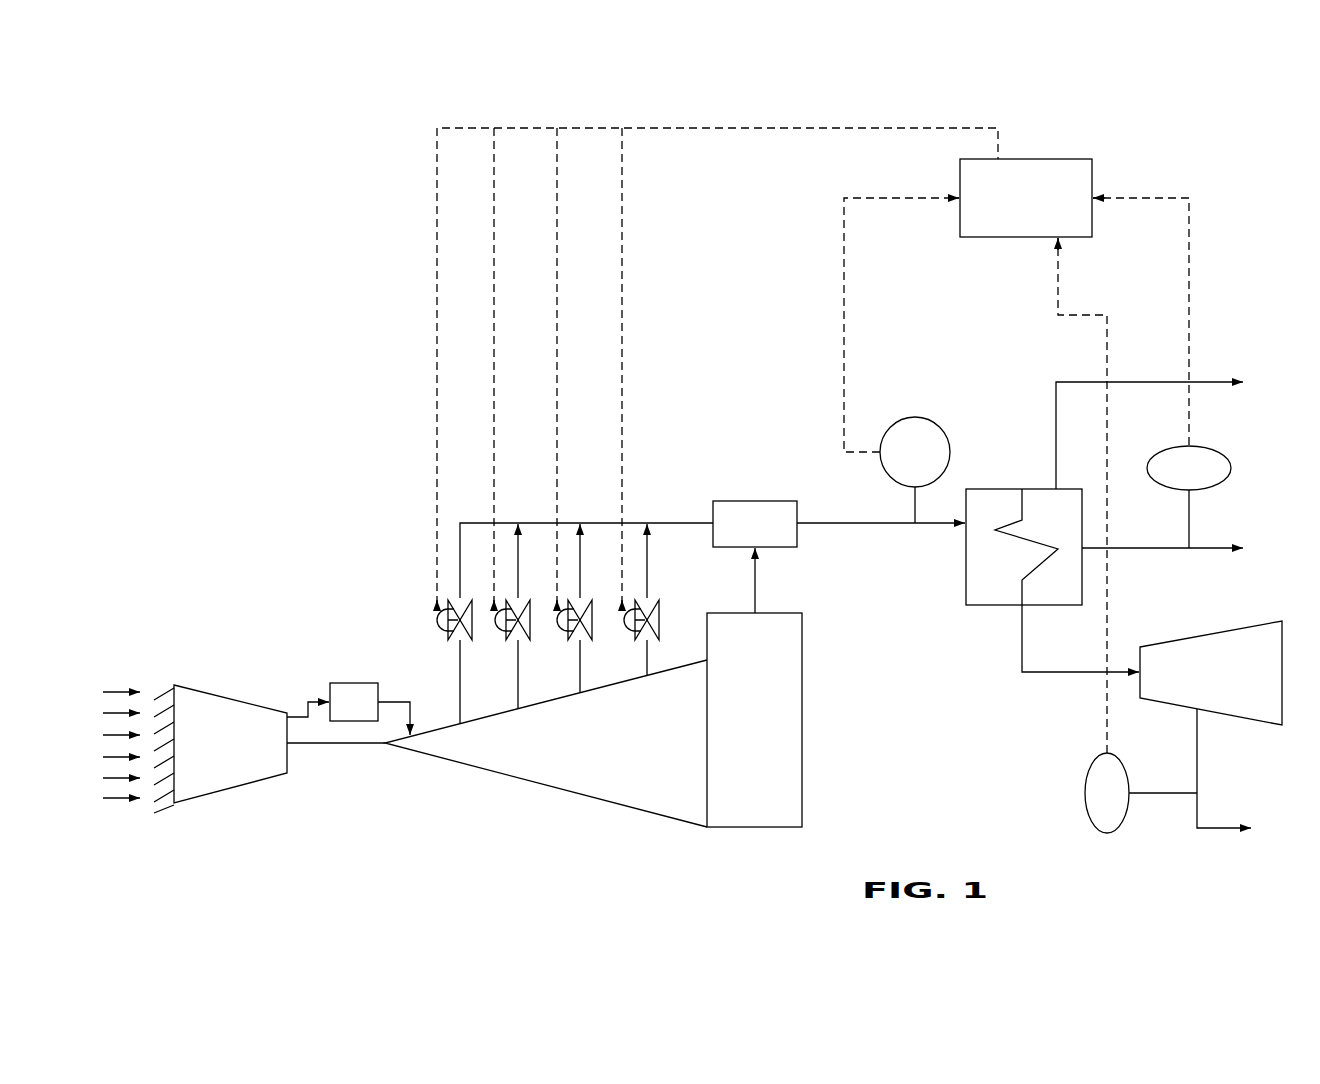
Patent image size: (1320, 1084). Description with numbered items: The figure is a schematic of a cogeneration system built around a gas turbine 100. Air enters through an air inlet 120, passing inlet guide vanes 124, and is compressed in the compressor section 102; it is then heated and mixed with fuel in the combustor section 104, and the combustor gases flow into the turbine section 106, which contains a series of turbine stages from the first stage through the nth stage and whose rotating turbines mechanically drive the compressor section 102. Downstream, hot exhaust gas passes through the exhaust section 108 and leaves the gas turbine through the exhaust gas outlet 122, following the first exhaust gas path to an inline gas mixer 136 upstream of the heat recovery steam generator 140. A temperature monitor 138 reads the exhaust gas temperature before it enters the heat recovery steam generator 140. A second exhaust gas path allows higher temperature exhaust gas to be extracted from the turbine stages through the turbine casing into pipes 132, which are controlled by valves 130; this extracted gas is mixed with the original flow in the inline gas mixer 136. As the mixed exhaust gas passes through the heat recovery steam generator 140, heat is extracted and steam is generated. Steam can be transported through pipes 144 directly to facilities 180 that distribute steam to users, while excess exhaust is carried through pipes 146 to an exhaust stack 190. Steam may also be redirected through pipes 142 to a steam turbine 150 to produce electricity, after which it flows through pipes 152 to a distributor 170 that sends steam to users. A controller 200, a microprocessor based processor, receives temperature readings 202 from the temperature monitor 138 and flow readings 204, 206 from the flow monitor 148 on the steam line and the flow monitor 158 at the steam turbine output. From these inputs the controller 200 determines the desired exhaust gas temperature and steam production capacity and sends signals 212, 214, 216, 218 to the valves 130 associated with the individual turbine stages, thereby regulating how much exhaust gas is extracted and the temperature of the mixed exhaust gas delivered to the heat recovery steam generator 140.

The gas turbine 100 is at (325, 824).
The compressor section 102 is at (236, 695).
The combustor section 104 is at (352, 683).
The turbine section 106 is at (535, 783).
The exhaust section 108 is at (745, 828).
The air inlet 120 is at (99, 745).
The exhaust gas outlet 122 is at (758, 584).
The inlet guide vanes 124 is at (162, 812).
The valves 130 is at (656, 607).
The pipes 132 is at (460, 680).
The inline gas mixer 136 is at (746, 500).
The temperature monitor 138 is at (940, 426).
The heat recovery steam generator 140 is at (985, 606).
The pipes 142 is at (1050, 673).
The pipes 144 is at (1135, 548).
The pipes 146 is at (1147, 382).
The flow monitor 148 is at (1224, 482).
The steam turbine 150 is at (1241, 630).
The pipes 152 is at (1197, 764).
The flow monitor 158 is at (1086, 810).
The distributor 170 is at (1279, 828).
The facilities 180 is at (1276, 548).
The exhaust stack 190 is at (1271, 382).
The controller 200 is at (1057, 158).
The temperature readings 202 is at (844, 250).
The flow readings 204 is at (1058, 286).
The flow readings 206 is at (1189, 222).
The signals 212 is at (437, 197).
The valve control line 214 is at (494, 197).
The valve control line 216 is at (557, 197).
The valve control line 218 is at (622, 197).